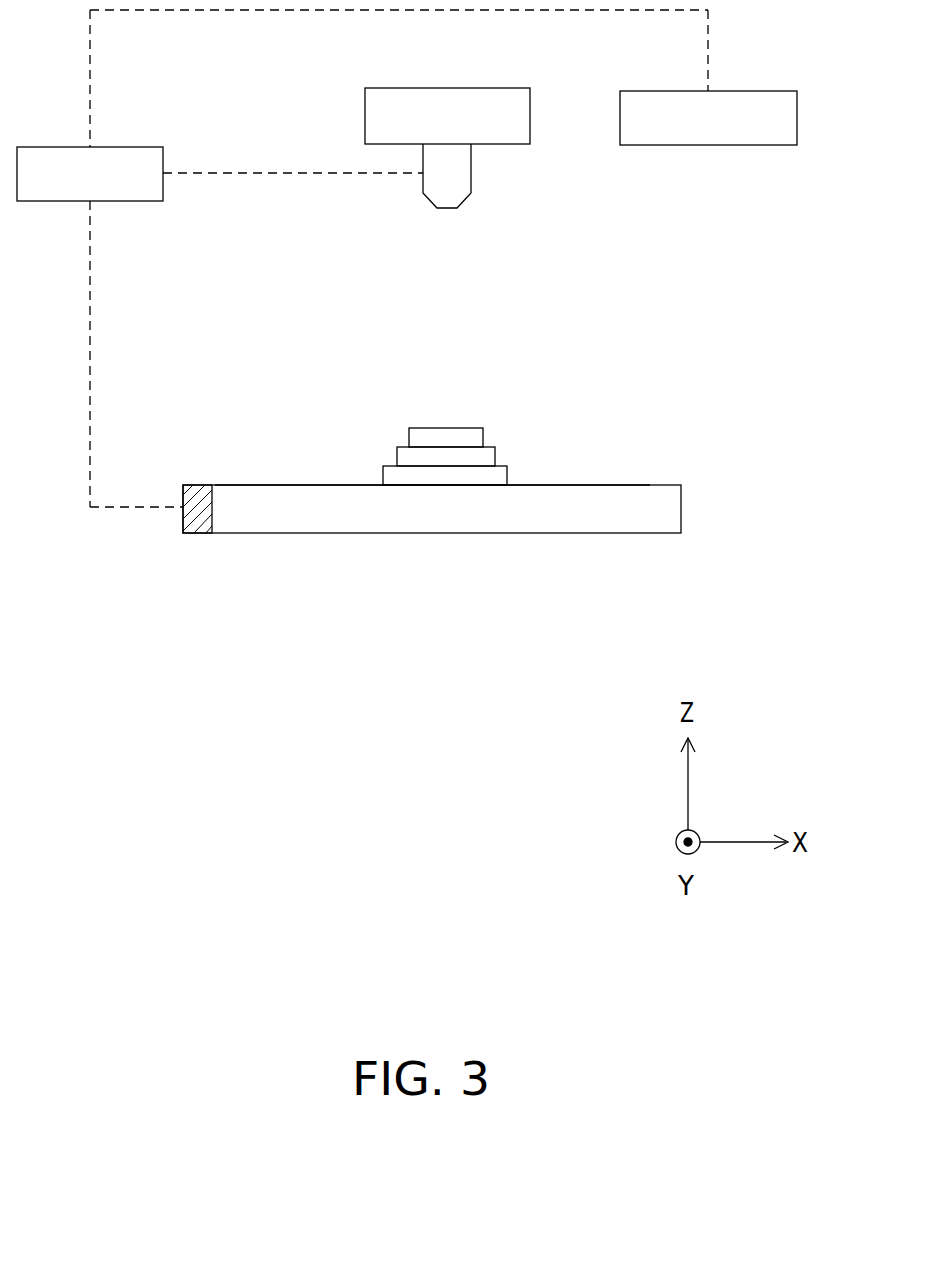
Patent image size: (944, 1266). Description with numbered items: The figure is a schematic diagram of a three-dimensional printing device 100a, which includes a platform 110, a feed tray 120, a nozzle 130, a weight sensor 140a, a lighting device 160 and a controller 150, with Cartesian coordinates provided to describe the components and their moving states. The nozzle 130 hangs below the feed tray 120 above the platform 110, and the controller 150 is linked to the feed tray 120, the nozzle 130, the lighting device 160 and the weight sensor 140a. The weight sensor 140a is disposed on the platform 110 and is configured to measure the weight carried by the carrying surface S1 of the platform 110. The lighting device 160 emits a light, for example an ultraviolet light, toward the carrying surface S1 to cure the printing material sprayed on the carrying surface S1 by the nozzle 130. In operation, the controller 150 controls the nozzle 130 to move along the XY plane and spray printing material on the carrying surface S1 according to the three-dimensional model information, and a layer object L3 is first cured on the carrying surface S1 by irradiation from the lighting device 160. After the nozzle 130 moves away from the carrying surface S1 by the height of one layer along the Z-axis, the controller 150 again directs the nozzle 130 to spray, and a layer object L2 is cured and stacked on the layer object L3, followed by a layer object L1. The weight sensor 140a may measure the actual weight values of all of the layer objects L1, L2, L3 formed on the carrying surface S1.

The 3D printing device 100a is at (423, 321).
The platform 110 is at (681, 507).
The feed tray 120 is at (445, 88).
The nozzle 130 is at (427, 198).
The weight sensor 140a is at (195, 533).
The controller 150 is at (145, 146).
The lighting device 160 is at (745, 90).
The carrying surface S1 is at (660, 481).
The layer object L1 is at (483, 437).
The layer object L2 is at (495, 458).
The layer object L3 is at (507, 475).